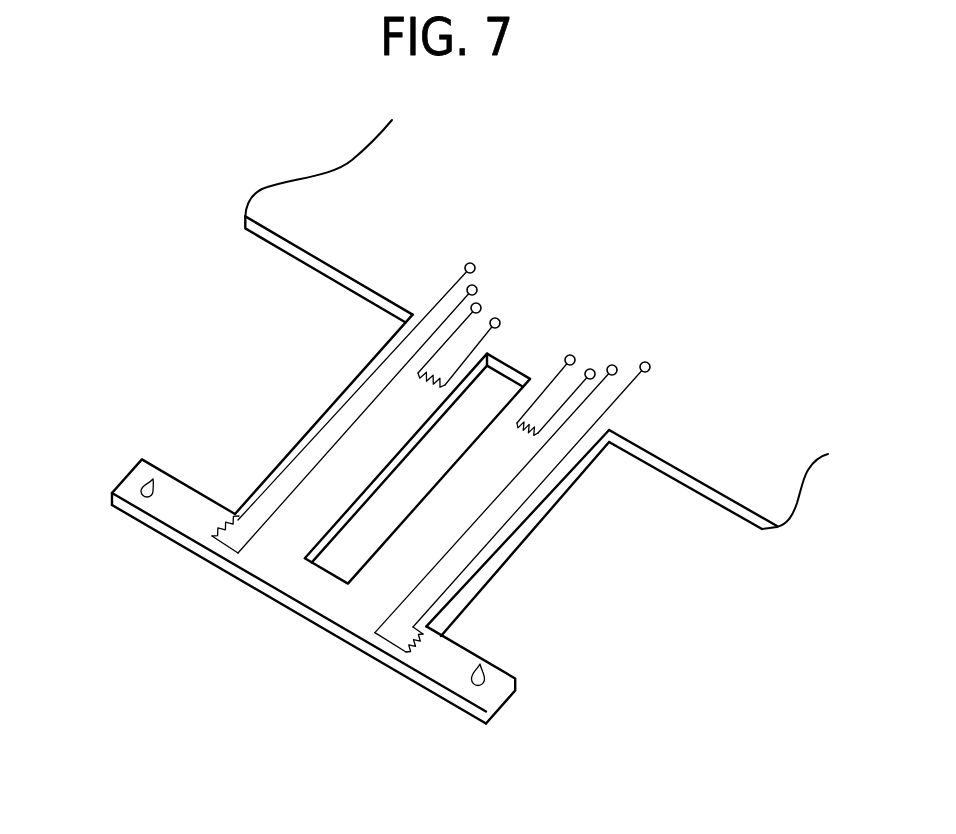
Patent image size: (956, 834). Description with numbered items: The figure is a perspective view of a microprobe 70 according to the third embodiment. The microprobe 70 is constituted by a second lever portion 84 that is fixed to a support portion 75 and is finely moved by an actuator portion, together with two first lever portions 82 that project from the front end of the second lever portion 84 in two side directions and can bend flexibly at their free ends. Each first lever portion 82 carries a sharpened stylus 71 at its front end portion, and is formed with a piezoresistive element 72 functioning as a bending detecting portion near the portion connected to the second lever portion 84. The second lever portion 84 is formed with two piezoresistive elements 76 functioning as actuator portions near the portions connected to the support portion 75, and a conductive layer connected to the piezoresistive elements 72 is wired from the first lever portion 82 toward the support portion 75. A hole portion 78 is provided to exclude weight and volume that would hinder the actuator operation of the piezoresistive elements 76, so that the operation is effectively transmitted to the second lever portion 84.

The microprobe 70 is at (178, 302).
The stylus 71 is at (153, 481).
The piezoresistive element 72 is at (223, 537).
The support portion 75 is at (437, 212).
The piezoresistive element 76 is at (418, 375).
The hole portion 78 is at (498, 387).
The first lever portion 82 is at (188, 566).
The second lever portion 84 is at (718, 500).